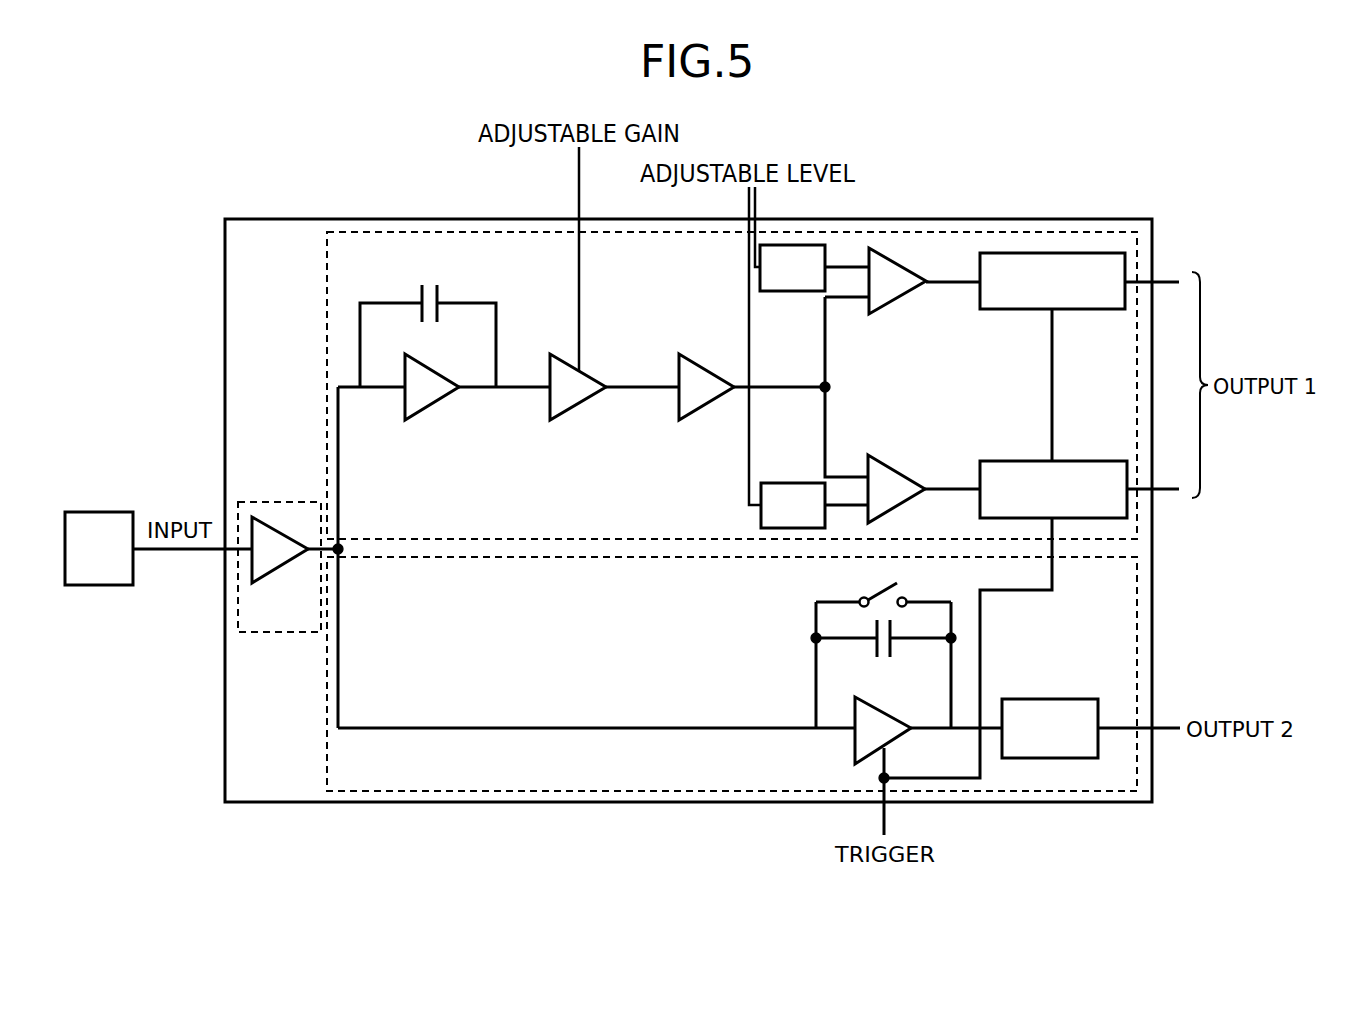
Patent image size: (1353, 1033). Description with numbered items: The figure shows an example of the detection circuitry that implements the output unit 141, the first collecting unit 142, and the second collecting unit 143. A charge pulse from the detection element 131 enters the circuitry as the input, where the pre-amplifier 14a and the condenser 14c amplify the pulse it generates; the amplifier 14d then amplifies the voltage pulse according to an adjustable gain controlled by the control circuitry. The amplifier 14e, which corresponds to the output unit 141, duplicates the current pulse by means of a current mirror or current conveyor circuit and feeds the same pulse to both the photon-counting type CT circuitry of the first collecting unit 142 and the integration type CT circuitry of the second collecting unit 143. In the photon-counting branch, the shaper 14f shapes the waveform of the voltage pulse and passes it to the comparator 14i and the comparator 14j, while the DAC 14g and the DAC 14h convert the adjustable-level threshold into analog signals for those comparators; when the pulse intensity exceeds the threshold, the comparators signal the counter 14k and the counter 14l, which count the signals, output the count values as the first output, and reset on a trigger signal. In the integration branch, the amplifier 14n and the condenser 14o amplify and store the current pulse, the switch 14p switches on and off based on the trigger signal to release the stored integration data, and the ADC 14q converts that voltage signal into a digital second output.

The detection element 131 is at (100, 512).
The output unit 141 is at (280, 633).
The first collecting unit 142 is at (1077, 232).
The second collecting unit 143 is at (1138, 628).
The pre-amplifier 14a is at (437, 408).
The condenser 14c is at (452, 303).
The amplifier 14d is at (584, 408).
The amplifier 14e is at (286, 570).
The shaper 14f is at (710, 372).
The DAC 14g is at (790, 297).
The DAC 14h is at (791, 483).
The comparator 14i is at (895, 308).
The comparator 14j is at (907, 478).
The counter 14k is at (1014, 311).
The counter 14l is at (1018, 461).
The amplifier 14n is at (900, 718).
The condenser 14o is at (872, 643).
The switch 14p is at (906, 591).
The analog-to-digital converter (ADC) 14q is at (1052, 699).